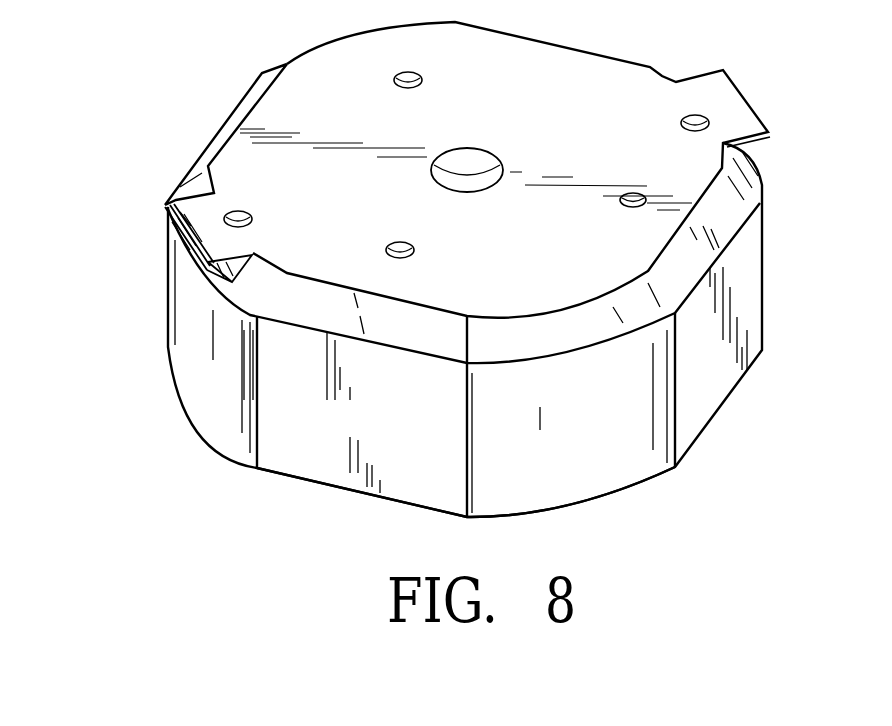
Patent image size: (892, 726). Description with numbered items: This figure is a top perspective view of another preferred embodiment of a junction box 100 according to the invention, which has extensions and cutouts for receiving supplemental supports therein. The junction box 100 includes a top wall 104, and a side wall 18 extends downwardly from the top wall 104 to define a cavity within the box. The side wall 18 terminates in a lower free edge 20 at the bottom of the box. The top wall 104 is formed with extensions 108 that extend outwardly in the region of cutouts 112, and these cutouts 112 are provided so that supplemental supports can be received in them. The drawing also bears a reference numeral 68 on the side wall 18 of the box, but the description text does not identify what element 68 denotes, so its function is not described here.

The housing assembly 100 is at (236, 62).
The bottom plate 104 is at (584, 122).
The bent tab 108 is at (168, 203).
The locking flange 112 is at (212, 279).
The side wall face 68 is at (371, 434).
The housing side wall 18 is at (615, 431).
The bottom edge of housing 20 is at (277, 476).